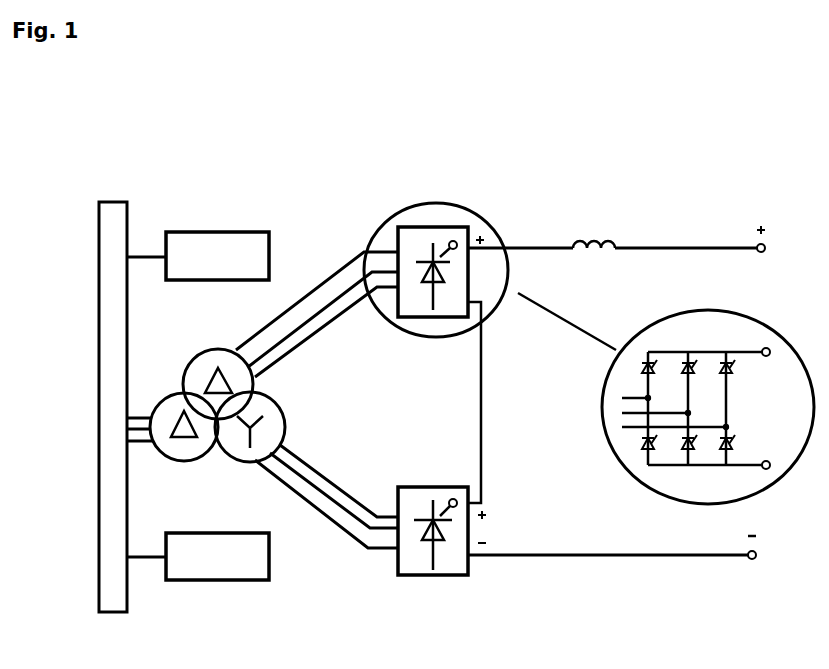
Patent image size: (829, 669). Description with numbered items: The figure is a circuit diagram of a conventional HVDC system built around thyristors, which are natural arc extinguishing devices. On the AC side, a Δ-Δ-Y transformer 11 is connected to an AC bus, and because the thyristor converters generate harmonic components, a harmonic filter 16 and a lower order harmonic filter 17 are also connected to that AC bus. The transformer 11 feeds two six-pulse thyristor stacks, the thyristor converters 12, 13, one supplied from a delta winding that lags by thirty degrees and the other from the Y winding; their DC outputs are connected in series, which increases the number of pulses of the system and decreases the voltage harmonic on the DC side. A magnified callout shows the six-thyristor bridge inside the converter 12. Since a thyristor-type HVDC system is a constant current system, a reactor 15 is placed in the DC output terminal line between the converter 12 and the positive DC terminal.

The Δ-Δ-Y transformer 11 is at (287, 415).
The thyristor converter 12 is at (470, 212).
The thyristor converter 13 is at (447, 576).
The reactor 15 is at (592, 240).
The load 16 is at (223, 232).
The lower order harmonic filter 17 is at (225, 581).